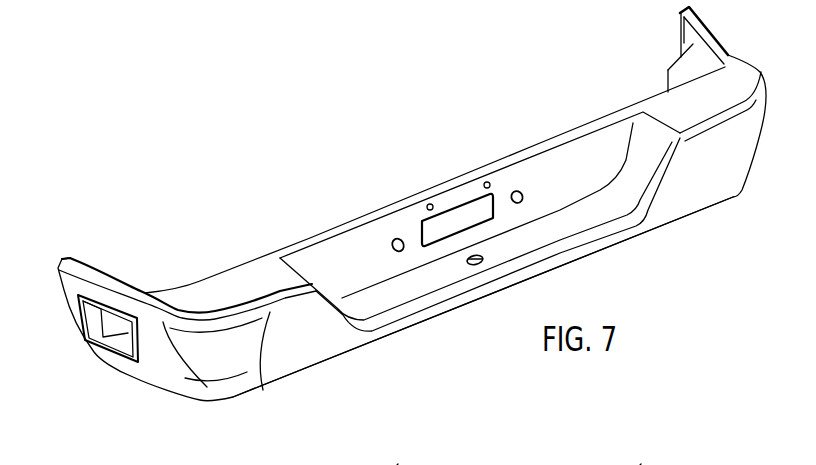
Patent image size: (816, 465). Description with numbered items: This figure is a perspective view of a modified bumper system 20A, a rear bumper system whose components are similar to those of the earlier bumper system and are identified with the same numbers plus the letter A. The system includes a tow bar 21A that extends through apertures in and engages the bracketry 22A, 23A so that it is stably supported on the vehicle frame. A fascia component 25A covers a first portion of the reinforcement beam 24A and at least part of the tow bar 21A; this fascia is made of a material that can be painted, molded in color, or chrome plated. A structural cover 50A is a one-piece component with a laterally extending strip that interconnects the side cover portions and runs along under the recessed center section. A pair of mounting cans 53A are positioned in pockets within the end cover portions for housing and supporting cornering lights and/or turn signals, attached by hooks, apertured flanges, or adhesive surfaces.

The modified bumper system 20A is at (292, 140).
The tow bar 21A is at (613, 247).
The bracketry 22A is at (397, 464).
The bracketry 23A is at (640, 464).
The reinforcement beam 24A is at (207, 273).
The fascia component 25A is at (502, 158).
The structural cover 50A is at (200, 398).
The mounting cans 53A is at (105, 338).